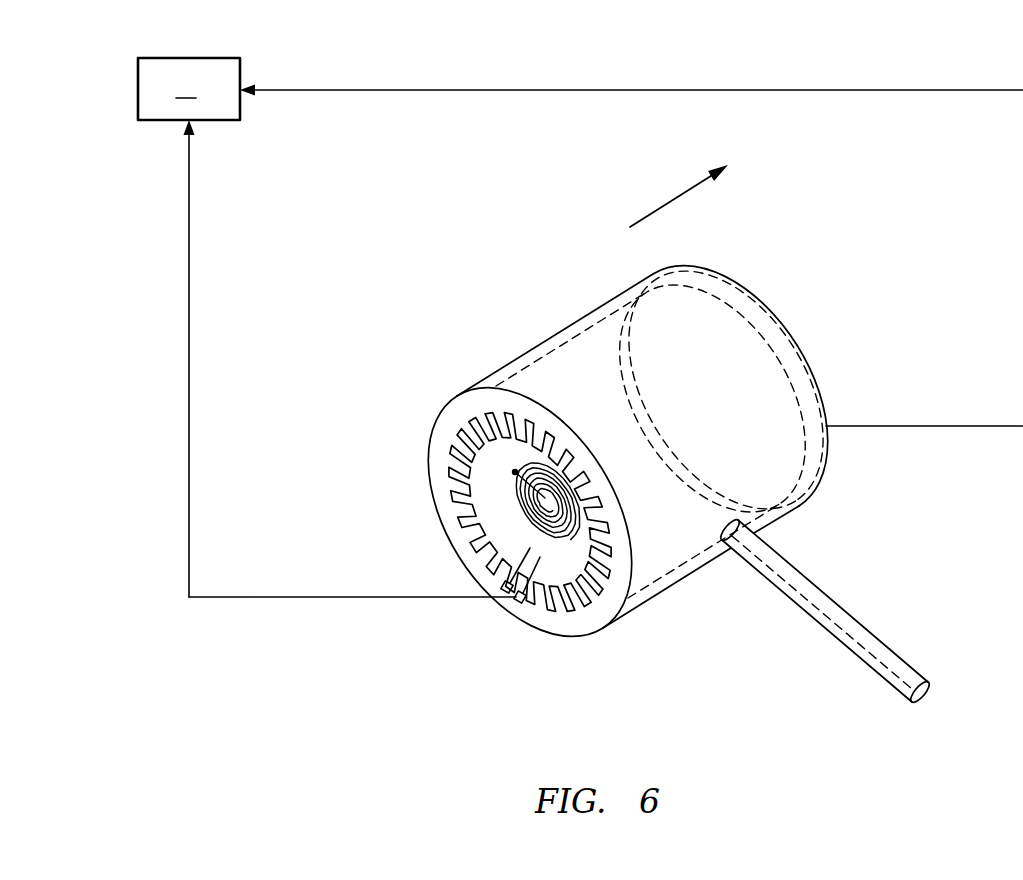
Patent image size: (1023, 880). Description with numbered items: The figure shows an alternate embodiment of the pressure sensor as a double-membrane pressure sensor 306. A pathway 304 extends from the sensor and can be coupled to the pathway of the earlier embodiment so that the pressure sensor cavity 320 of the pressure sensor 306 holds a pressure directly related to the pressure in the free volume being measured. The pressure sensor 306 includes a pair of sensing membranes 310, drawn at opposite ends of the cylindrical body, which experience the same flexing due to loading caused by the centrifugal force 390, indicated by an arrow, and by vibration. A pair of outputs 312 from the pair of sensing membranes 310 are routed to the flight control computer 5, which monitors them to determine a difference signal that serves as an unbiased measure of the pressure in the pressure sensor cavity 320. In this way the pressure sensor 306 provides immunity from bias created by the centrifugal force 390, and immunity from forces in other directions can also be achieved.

The flight control computer 5 is at (189, 89).
The pathway 304 is at (848, 648).
The double-membrane pressure sensor 306 is at (378, 297).
The sensing membranes 310 is at (781, 326).
The outputs 312 is at (913, 424).
The pressure sensor cavity 320 is at (559, 372).
The centrifugal force 390 is at (663, 203).